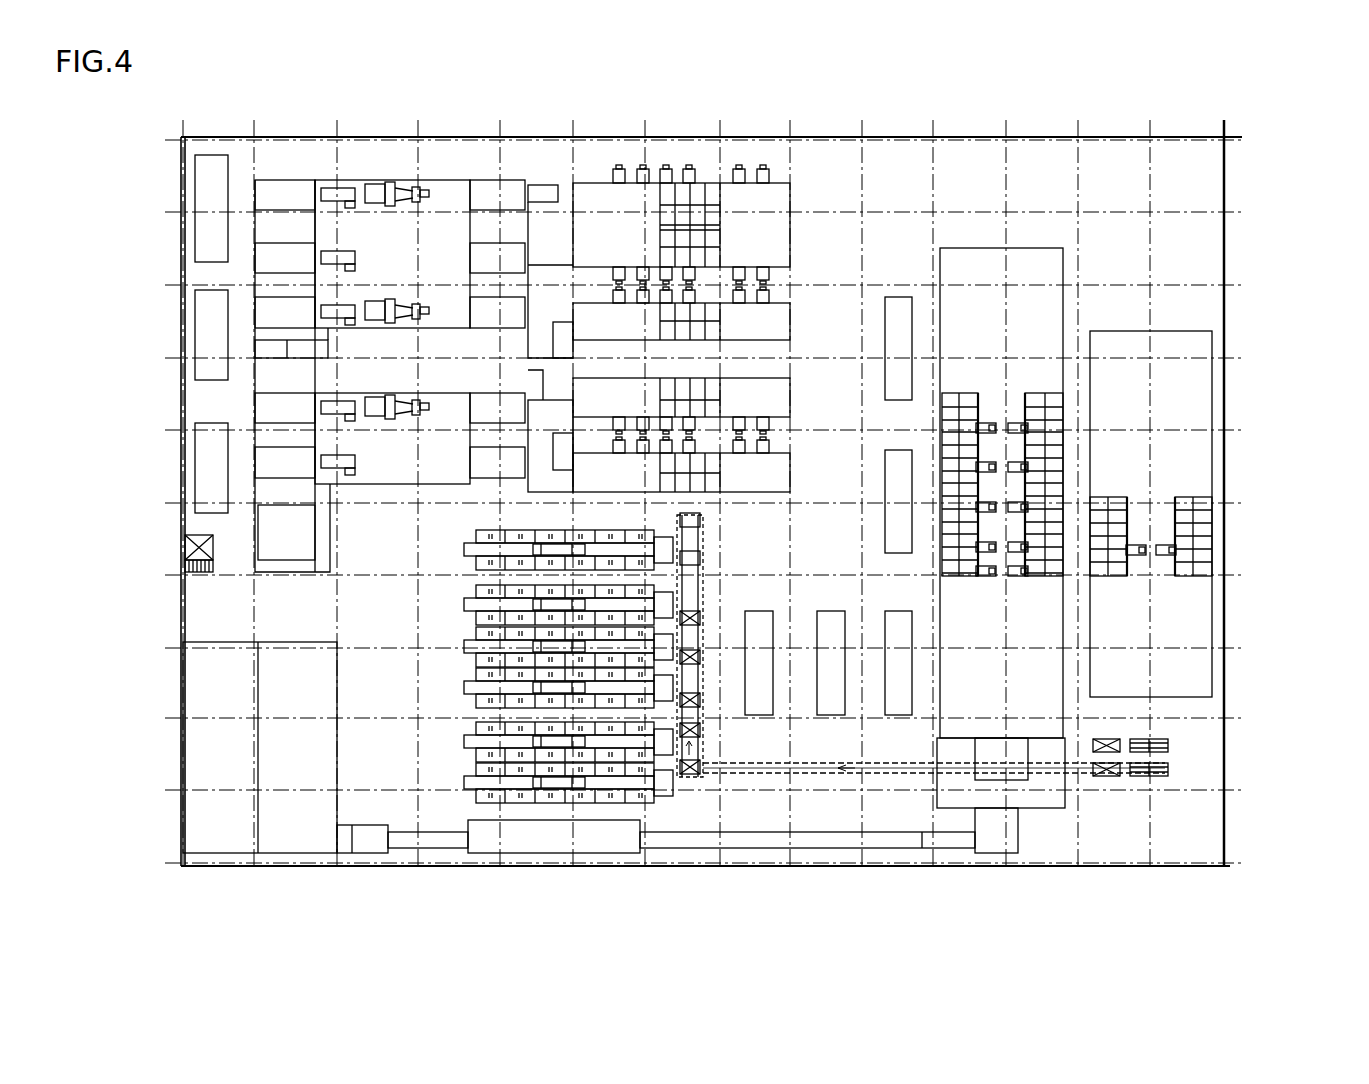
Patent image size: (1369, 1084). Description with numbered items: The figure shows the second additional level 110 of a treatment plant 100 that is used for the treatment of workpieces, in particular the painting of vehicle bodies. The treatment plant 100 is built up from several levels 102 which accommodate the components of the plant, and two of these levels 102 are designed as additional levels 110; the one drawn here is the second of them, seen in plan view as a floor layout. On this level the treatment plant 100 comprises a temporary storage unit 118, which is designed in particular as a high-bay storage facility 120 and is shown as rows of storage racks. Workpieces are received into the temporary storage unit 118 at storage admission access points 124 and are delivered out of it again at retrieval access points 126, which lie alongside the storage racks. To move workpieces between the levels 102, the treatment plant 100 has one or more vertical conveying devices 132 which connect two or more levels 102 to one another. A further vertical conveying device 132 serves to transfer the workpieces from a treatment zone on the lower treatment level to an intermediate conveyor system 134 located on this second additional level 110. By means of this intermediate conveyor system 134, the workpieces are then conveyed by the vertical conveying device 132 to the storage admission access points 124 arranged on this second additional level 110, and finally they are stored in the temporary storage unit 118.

The treatment plant 100 is at (1280, 333).
The level 102 is at (1238, 126).
The additional level 110 is at (1243, 150).
The temporary storage unit 118 is at (590, 775).
The high-bay storage facility 120 is at (545, 795).
The storage admission access point 124 is at (660, 563).
The retrieval access point 126 is at (690, 643).
The vertical conveying device 132 is at (1186, 744).
The intermediate conveyor system 134 is at (918, 770).